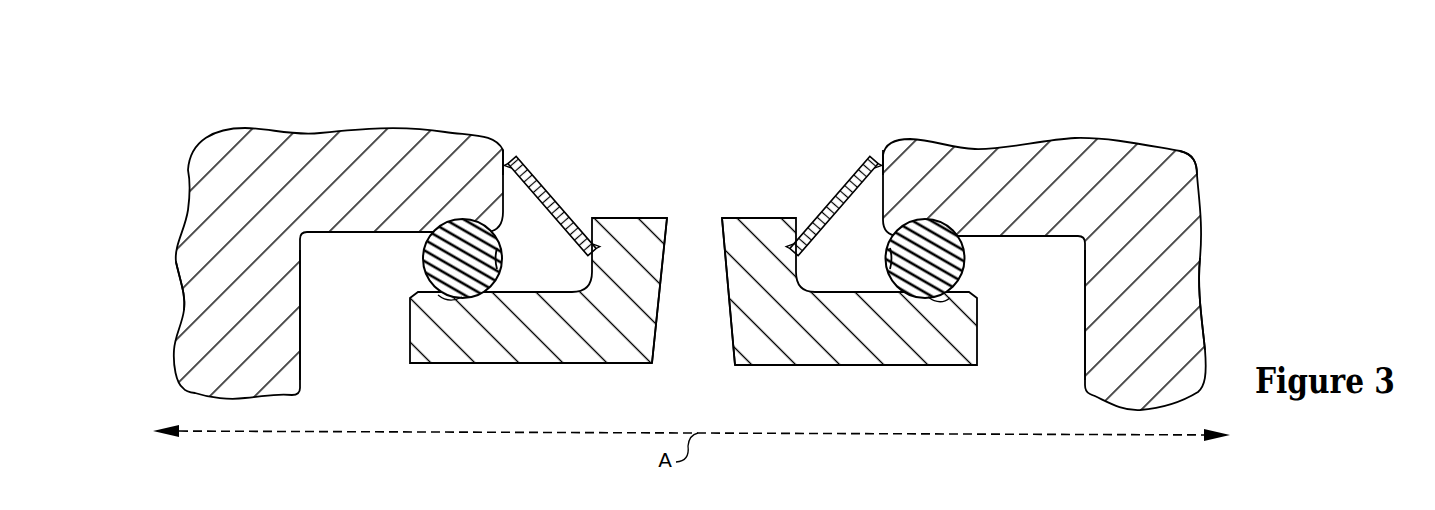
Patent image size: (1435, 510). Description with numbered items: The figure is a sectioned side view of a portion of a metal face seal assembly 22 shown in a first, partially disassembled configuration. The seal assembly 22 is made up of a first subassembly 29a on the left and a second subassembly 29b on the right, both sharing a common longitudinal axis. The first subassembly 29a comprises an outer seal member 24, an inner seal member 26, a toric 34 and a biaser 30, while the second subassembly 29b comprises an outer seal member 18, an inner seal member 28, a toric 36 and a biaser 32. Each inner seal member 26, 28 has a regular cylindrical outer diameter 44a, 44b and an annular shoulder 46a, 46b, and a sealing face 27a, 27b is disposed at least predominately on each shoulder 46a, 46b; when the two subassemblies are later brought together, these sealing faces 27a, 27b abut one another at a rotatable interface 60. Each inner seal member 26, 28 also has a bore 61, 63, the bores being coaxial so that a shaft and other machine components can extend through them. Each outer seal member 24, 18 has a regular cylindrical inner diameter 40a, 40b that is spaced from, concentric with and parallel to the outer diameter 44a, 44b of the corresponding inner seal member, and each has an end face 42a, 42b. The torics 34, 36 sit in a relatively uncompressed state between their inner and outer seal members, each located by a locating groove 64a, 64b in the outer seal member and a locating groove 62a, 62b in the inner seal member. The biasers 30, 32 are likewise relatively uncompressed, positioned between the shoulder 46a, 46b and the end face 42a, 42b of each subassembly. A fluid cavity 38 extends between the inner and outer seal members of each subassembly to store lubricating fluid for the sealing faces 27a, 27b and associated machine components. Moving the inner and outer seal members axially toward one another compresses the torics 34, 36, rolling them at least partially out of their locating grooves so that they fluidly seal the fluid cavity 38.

The outer seal member 18 is at (1184, 201).
The seal assembly 22 is at (1202, 153).
The outer seal member 24 is at (206, 196).
The inner seal member 26 is at (581, 357).
The sealing face 27a is at (676, 220).
The sealing face 27b is at (715, 256).
The inner seal member 28 is at (858, 357).
The first subassembly 29a is at (182, 297).
The second subassembly 29b is at (1203, 300).
The biaser 30 is at (548, 186).
The biaser 32 is at (843, 186).
The toric 34 is at (496, 239).
The toric 36 is at (910, 243).
The fluid cavity 38 is at (358, 334).
The inner diameter 40a is at (371, 238).
The inner diameter 40b is at (1013, 241).
The end face 42a is at (514, 152).
The end face 42b is at (870, 152).
The outer diameter 44a is at (516, 289).
The outer diameter 44b is at (876, 289).
The annular shoulder 46a is at (614, 223).
The annular shoulder 46b is at (772, 223).
The rotatable interface 60 is at (694, 322).
The bore 61 is at (643, 360).
The locating groove 62a is at (455, 301).
The locating groove 62b is at (933, 302).
The bore 63 is at (752, 362).
The locating groove 64a is at (463, 219).
The locating groove 64b is at (927, 219).